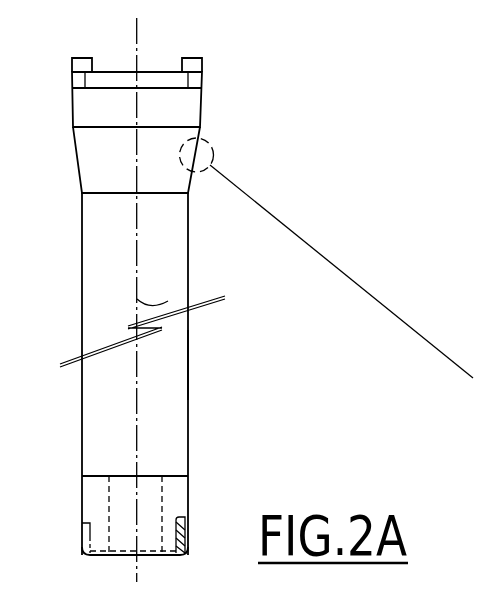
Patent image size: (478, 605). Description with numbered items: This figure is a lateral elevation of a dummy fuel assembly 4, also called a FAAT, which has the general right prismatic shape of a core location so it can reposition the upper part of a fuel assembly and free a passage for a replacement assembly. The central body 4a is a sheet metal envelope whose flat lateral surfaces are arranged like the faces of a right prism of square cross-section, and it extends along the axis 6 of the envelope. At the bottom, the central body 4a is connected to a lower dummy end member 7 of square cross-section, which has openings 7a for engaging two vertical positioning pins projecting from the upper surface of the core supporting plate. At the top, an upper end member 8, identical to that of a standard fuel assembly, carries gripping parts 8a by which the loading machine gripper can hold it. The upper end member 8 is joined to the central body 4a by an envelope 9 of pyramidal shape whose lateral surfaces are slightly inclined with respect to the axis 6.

The dummy fuel assembly 4 is at (173, 442).
The central body 4a is at (157, 355).
The axis 6 is at (173, 292).
The lower dummy end member 7 is at (173, 493).
The openings 7a is at (82, 545).
The upper end member 8 is at (172, 110).
The gripping parts 8a is at (79, 63).
The envelope 9 is at (103, 157).